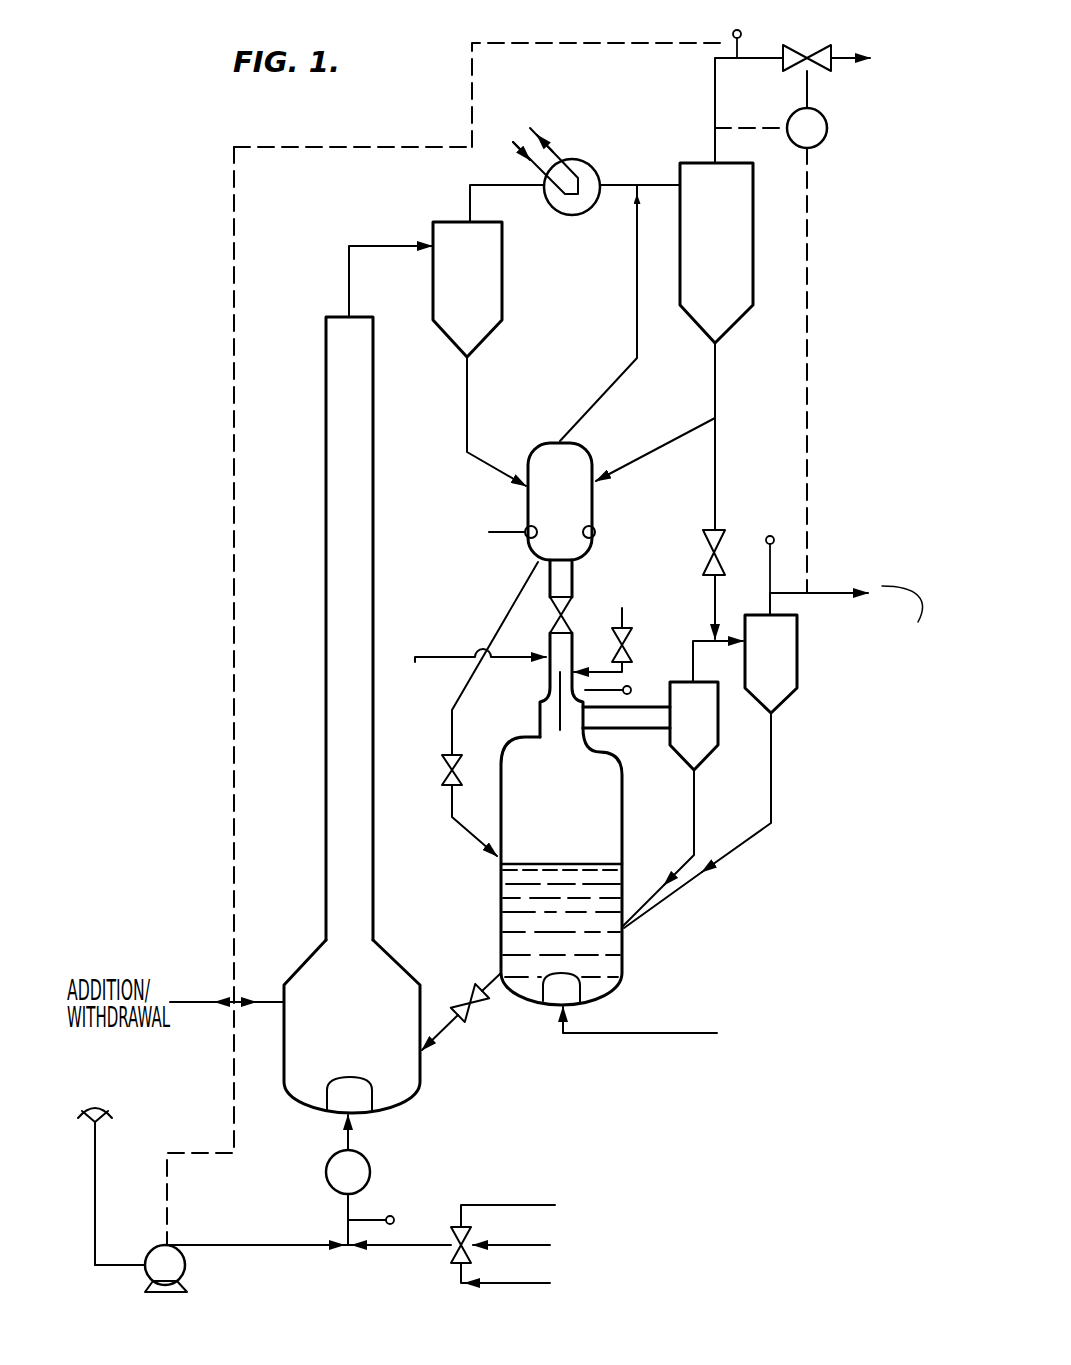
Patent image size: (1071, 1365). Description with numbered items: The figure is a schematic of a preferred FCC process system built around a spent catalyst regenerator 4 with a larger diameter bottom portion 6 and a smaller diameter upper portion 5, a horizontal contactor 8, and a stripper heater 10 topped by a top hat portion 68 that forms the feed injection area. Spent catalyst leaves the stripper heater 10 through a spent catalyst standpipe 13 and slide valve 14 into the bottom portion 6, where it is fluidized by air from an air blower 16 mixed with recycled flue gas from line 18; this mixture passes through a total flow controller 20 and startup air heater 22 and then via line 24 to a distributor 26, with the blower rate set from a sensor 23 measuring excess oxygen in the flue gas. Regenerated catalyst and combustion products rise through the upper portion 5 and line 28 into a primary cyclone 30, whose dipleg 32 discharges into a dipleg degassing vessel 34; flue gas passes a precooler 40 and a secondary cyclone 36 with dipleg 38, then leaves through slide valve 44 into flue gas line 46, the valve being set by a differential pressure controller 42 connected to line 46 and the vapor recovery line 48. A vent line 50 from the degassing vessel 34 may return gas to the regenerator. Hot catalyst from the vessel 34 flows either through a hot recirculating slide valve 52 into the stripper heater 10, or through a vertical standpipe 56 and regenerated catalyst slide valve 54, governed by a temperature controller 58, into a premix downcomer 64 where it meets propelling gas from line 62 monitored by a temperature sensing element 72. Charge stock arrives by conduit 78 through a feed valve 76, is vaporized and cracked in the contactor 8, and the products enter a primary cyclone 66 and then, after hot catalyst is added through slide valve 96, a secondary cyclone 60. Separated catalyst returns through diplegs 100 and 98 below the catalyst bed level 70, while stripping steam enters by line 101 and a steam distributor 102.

The spent catalyst regenerator 4 is at (328, 708).
The upper portion 5 is at (358, 683).
The bottom portion 6 is at (360, 1023).
The horizontal contactor 8 is at (622, 734).
The stripper heater 10 is at (625, 956).
The spent catalyst standpipe 13 is at (446, 1036).
The slide valve 14 is at (484, 1010).
The air blower 16 is at (187, 1272).
The line 18 is at (398, 1252).
The total flow controller 20 is at (393, 1216).
The startup air heater 22 is at (370, 1170).
The sensor 23 is at (734, 30).
The line 24 is at (352, 1140).
The distributor 26 is at (335, 1108).
The line 28 is at (348, 262).
The primary cyclone 30 is at (481, 295).
The dipleg 32 is at (471, 399).
The dipleg degassing vessel 34 is at (573, 517).
The secondary cyclone 36 is at (729, 255).
The dipleg 38 is at (718, 400).
The precooler 40 is at (591, 157).
The differential pressure controller 42 is at (830, 138).
The slide valve 44 is at (803, 45).
The flue gas line 46 is at (862, 45).
The vapor recovery line 48 is at (812, 592).
The vent line 50 is at (597, 400).
The hot recirculating slide valve 52 is at (447, 782).
The regenerated catalyst slide valve 54 is at (549, 621).
The vertical standpipe 56 is at (578, 584).
The temperature controller 58 is at (778, 528).
The secondary cyclone 60 is at (787, 673).
The line 62 is at (415, 660).
The premix downcomer 64 is at (546, 677).
The primary cyclone 66 is at (708, 740).
The top hat portion 68 is at (536, 712).
The catalyst bed level 70 is at (522, 868).
The temperature sensing element 72 is at (631, 690).
The feed valve 76 is at (633, 650).
The conduit 78 is at (623, 602).
The slide valve 96 is at (702, 562).
The dipleg 98 is at (780, 789).
The dipleg 100 is at (690, 808).
The line 101 is at (655, 1037).
The steam distributor 102 is at (574, 986).